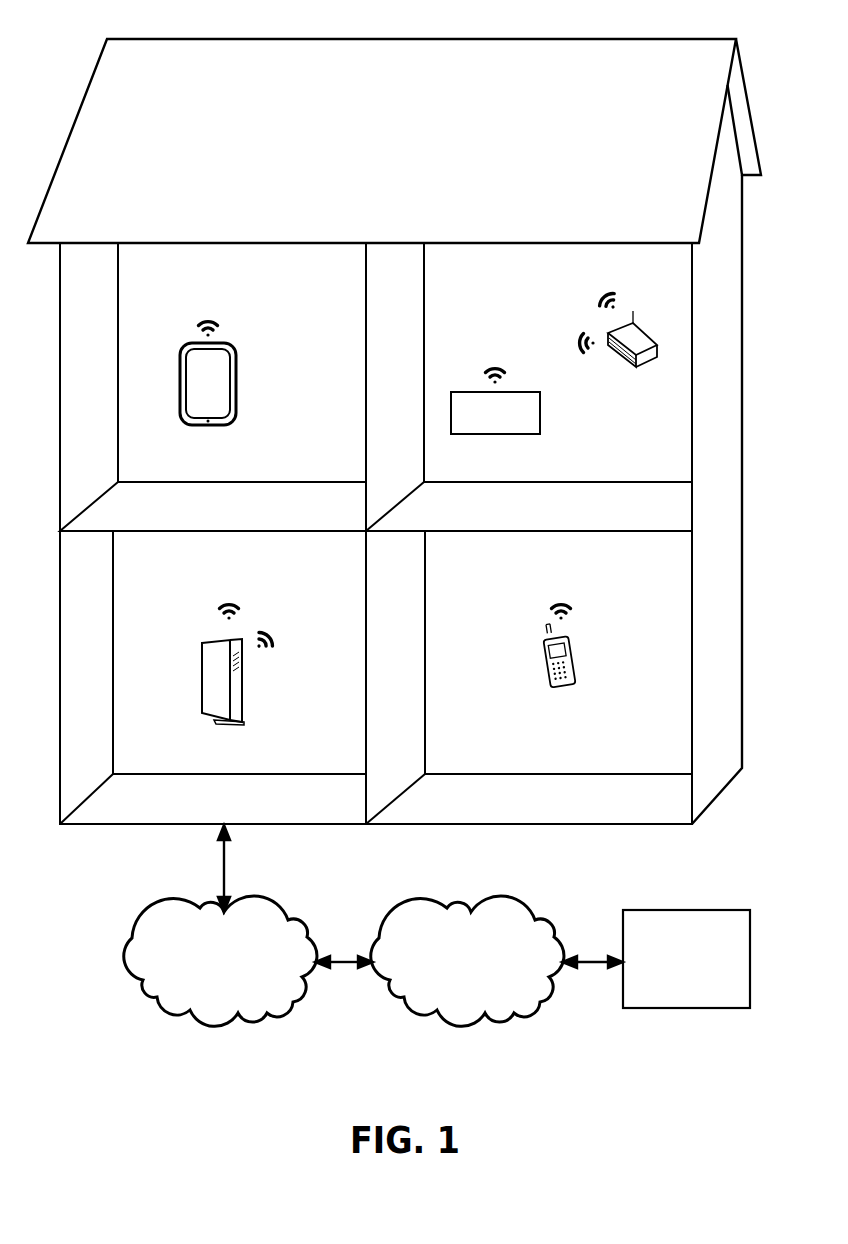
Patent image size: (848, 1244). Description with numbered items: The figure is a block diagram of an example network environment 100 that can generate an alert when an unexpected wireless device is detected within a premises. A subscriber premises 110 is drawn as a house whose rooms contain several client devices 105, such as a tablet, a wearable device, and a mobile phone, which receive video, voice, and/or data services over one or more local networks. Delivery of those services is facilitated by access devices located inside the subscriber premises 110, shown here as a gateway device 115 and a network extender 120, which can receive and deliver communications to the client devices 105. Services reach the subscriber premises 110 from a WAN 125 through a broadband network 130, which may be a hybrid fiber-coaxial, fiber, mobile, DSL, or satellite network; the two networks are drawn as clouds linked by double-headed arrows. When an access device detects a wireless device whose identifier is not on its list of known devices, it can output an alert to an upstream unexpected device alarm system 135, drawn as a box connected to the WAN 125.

The network environment 100 is at (59, 1025).
The client device 105 is at (226, 343).
The subscriber premises 110 is at (164, 37).
The gateway device 115 is at (212, 720).
The network extender 120 is at (638, 363).
The WAN 125 is at (474, 1027).
The broadband network 130 is at (228, 1027).
The unexpected device alarm system 135 is at (668, 1010).